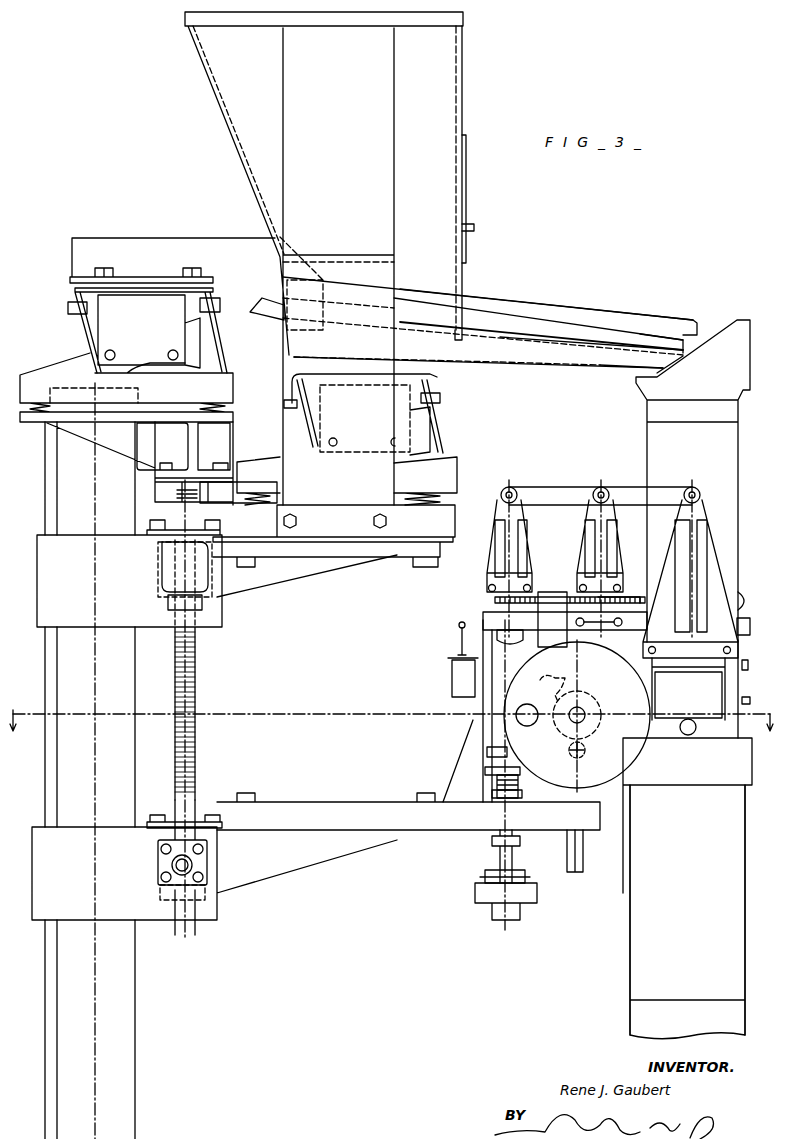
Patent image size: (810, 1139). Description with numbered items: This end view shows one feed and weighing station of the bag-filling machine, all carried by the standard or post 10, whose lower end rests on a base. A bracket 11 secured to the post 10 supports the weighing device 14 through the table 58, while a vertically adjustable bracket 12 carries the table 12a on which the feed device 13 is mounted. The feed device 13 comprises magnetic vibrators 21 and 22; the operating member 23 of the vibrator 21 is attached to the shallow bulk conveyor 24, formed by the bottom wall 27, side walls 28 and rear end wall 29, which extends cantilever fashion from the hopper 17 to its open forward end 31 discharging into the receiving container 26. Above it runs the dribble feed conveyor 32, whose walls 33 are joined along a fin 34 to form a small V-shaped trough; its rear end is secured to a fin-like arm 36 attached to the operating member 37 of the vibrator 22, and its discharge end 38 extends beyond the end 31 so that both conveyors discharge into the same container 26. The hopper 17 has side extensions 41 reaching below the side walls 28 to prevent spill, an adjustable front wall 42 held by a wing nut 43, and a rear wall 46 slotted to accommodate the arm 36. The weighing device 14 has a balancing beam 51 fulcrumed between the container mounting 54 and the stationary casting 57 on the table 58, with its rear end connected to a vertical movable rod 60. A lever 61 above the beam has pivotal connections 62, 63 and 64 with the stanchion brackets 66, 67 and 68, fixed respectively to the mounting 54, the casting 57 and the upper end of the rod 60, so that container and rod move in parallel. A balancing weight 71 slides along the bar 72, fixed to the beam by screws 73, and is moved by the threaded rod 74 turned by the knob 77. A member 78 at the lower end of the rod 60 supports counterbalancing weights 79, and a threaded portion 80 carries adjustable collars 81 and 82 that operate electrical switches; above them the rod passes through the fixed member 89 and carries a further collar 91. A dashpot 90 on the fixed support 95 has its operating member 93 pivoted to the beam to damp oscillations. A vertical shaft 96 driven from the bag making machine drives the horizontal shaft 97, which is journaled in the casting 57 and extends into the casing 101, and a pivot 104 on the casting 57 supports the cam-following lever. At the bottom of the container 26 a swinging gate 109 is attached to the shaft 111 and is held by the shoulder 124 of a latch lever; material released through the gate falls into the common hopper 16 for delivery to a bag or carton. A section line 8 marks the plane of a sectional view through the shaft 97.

The section line 8 is at (389, 711).
The post 10 is at (122, 1030).
The bracket 11 is at (295, 858).
The bracket 12 is at (228, 600).
The table 12a is at (456, 520).
The feed device 13 is at (484, 281).
The weighing device 14 is at (490, 597).
The common hopper 16 is at (734, 916).
The hopper 17 is at (462, 97).
The magnetic vibrator 21 is at (438, 460).
The magnetic vibrator 22 is at (58, 353).
The operating member 23 is at (430, 380).
The bulk conveyor 24 is at (525, 360).
The receiving container 26 is at (740, 434).
The bottom wall 27 is at (563, 362).
The side walls 28 is at (488, 352).
The rear end wall 29 is at (280, 325).
The forward end 31 is at (683, 354).
The dribble feed conveyor 32 is at (546, 304).
The walls 33 is at (575, 300).
The fin 34 is at (664, 333).
The fin-like arm 36 is at (150, 248).
The operating member 37 is at (73, 296).
The discharge end 38 is at (707, 308).
The side extensions 41 is at (445, 268).
The front wall 42 is at (466, 170).
The wing nut 43 is at (472, 226).
The rear wall 46 is at (283, 272).
The balancing beam 51 is at (496, 636).
The mounting 54 is at (755, 612).
The stationary casting 57 is at (600, 735).
The table 58 is at (365, 802).
The movable rod 60 is at (488, 692).
The lever 61 is at (553, 484).
The pivotal connection 62 is at (700, 491).
The pivotal connection 63 is at (608, 491).
The pivotal connection 64 is at (503, 492).
The stanchion brackets 66 is at (708, 535).
The stanchion brackets 67 is at (612, 535).
The stanchion brackets 68 is at (522, 535).
The balancing weight 71 is at (555, 590).
The bar 72 is at (483, 616).
The screws 73 is at (599, 622).
The rod 74 is at (634, 588).
The knob 77 is at (752, 597).
The member 78 is at (537, 897).
The counterbalancing weights 79 is at (480, 877).
The threaded portion 80 is at (518, 790).
The adjustable collar 81 is at (492, 795).
The adjustable collar 82 is at (520, 840).
The fixed member 89 is at (487, 752).
The dashpot 90 is at (458, 678).
The adjustable collar 91 is at (485, 770).
The operating member 93 is at (459, 635).
The fixed support 95 is at (470, 725).
The vertical shaft 96 is at (583, 860).
The horizontal shaft 97 is at (585, 712).
The casing 101 is at (628, 756).
The pivot 104 is at (547, 688).
The swinging gate 109 is at (748, 690).
The shaft 111 is at (668, 668).
The shoulder 124 is at (690, 735).